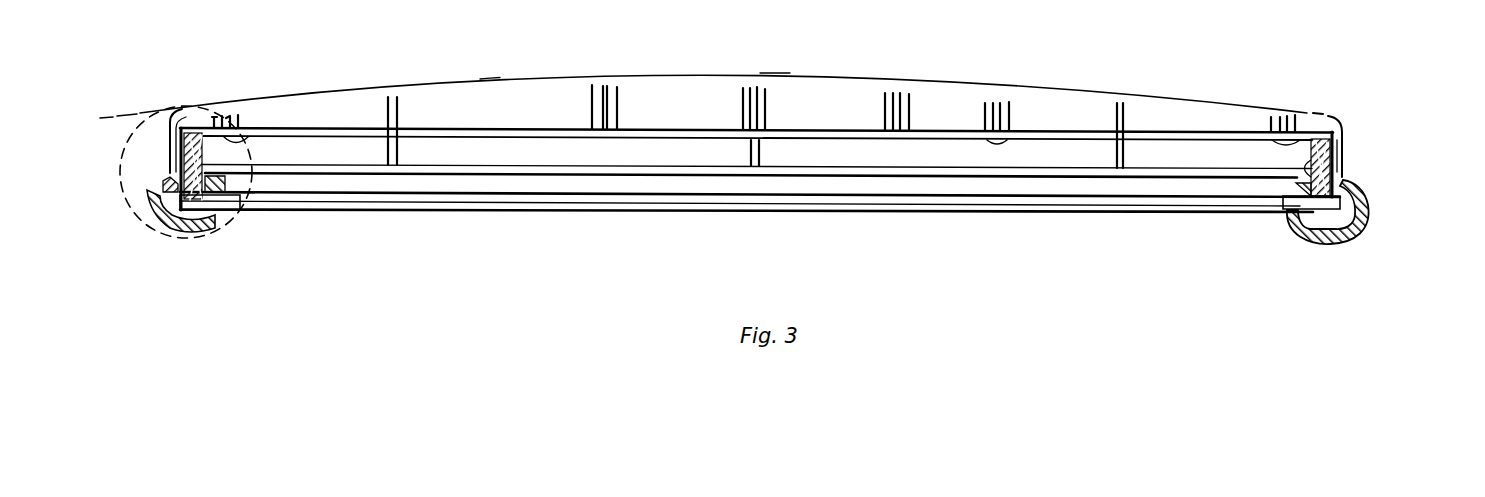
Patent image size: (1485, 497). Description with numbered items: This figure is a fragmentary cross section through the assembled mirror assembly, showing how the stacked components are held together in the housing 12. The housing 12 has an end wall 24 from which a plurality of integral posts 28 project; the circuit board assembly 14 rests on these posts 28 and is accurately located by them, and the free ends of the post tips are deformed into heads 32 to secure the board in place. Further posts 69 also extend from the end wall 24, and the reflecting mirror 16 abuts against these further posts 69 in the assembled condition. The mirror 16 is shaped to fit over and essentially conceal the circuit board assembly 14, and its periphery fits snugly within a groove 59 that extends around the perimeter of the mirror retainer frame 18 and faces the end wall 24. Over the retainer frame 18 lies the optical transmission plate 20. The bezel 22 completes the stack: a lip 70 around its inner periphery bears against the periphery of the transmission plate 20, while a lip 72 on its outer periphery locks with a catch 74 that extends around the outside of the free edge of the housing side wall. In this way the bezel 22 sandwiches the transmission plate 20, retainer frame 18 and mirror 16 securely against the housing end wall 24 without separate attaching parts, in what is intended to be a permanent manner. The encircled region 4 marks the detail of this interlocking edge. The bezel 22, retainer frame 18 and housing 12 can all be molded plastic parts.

The detail region 4 is at (133, 139).
The housing 12 is at (1335, 118).
The circuit board assembly 14 is at (365, 128).
The reflecting mirror 16 is at (307, 164).
The mirror retainer frame 18 is at (255, 158).
The optical transmission plate 20 is at (592, 212).
The bezel 22 is at (1300, 243).
The end wall 24 is at (1027, 83).
The posts 28 is at (243, 130).
The heads 32 is at (998, 143).
The groove 59 is at (1333, 157).
The further posts 69 is at (385, 152).
The lip 70 is at (237, 220).
The lip 72 is at (152, 182).
The catch 74 is at (152, 198).